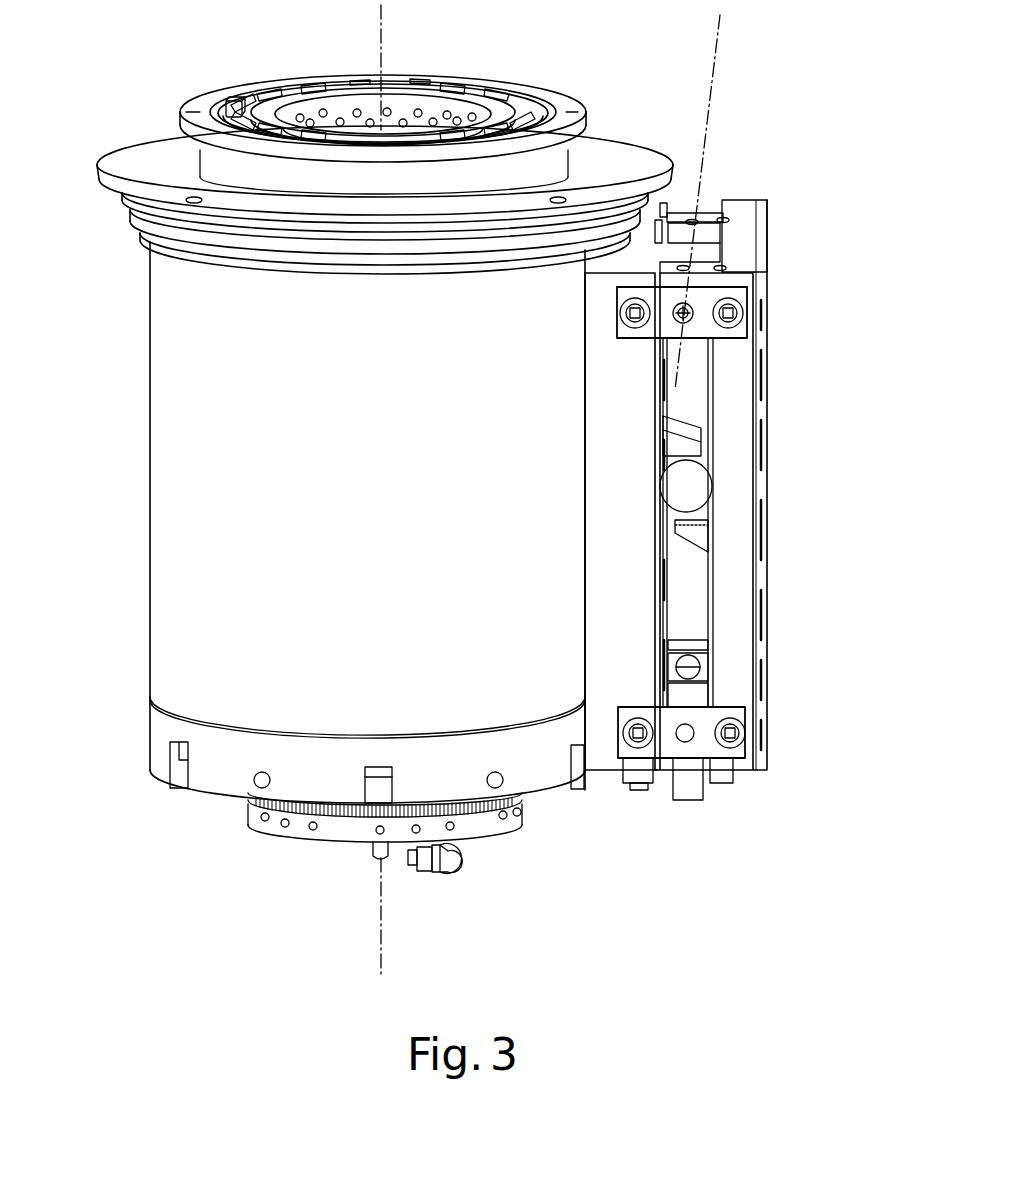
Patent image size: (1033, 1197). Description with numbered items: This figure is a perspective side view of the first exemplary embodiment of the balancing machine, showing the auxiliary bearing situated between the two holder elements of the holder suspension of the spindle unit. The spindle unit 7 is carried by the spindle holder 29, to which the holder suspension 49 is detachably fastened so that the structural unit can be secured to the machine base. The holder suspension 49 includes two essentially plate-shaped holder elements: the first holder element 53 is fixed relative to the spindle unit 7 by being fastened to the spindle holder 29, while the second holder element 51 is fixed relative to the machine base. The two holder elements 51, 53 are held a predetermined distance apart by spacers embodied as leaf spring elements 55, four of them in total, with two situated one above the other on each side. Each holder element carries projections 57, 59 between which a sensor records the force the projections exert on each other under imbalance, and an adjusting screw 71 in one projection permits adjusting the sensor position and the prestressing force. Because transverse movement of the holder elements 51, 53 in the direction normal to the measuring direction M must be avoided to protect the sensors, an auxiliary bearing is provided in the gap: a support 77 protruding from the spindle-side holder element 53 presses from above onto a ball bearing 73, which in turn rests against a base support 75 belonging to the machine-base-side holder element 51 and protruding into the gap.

The spindle unit 7 is at (135, 458).
The spindle holder 29 is at (223, 626).
The holder suspension 49 is at (806, 207).
The second holder element 51 is at (733, 515).
The first holder element 53 is at (612, 613).
The leaf spring element 55 is at (742, 298).
The projection 57 is at (700, 680).
The projection 59 is at (697, 213).
The adjusting screw 71 is at (660, 707).
The ball bearing 73 is at (749, 468).
The base support 75 is at (703, 540).
The support 77 is at (683, 443).
The measuring direction M is at (717, 33).